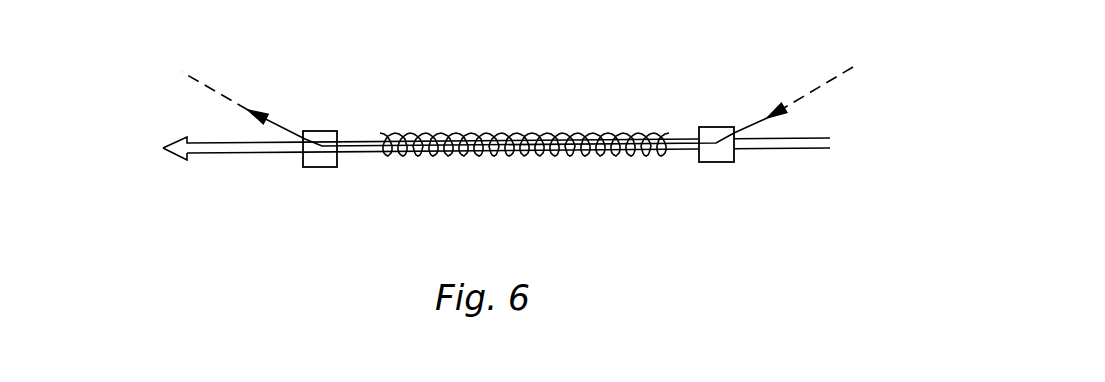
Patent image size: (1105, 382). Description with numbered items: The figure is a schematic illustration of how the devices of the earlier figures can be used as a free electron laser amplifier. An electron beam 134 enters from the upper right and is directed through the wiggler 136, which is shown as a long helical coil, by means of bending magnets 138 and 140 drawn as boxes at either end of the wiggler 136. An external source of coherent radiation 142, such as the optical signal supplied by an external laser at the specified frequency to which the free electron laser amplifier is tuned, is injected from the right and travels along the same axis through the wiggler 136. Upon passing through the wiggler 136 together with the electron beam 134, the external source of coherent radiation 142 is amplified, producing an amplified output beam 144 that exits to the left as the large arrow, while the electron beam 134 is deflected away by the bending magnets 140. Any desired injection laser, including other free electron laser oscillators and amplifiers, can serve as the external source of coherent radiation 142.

The electron beam 134 is at (765, 116).
The wiggler 136 is at (540, 152).
The bending magnets 138 is at (725, 162).
The bending magnets 140 is at (318, 167).
The external source of coherent radiation 142 is at (790, 150).
The amplified output beam 144 is at (222, 155).